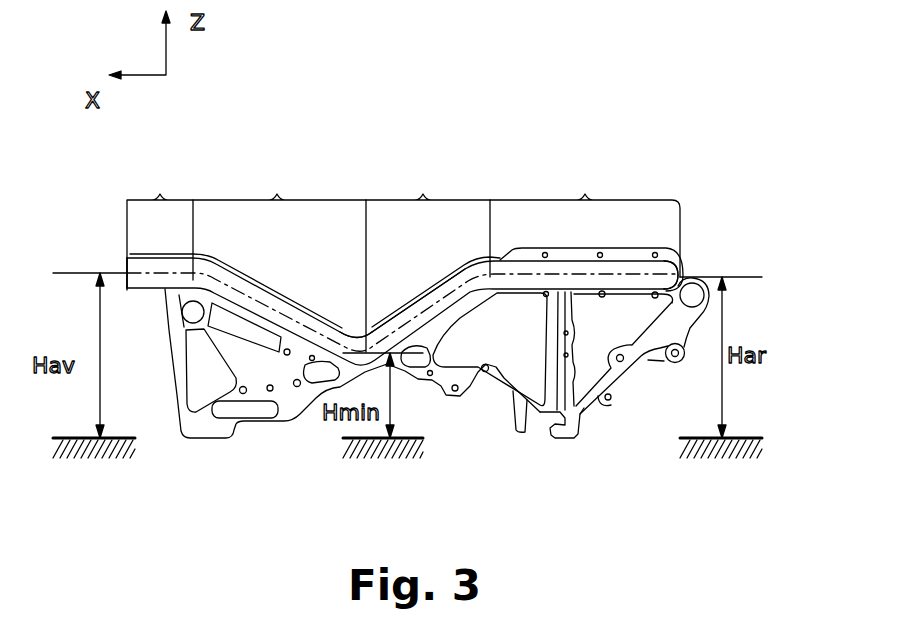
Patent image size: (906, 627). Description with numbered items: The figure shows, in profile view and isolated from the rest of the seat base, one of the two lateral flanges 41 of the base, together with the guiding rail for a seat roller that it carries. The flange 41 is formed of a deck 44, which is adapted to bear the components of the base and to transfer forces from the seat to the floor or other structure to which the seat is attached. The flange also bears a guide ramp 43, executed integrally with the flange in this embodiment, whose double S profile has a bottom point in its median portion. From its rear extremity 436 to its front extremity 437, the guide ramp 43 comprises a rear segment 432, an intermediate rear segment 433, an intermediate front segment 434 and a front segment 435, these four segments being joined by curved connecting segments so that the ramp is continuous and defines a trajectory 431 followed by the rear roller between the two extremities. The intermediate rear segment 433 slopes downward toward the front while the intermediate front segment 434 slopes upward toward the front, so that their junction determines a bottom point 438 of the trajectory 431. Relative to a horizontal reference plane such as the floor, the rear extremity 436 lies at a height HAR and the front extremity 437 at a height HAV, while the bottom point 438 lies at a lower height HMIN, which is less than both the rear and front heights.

The flange 41 is at (194, 459).
The guide ramp 43 is at (272, 292).
The deck 44 is at (642, 356).
The trajectory 431 is at (455, 297).
The rear segment 432 is at (585, 224).
The intermediate rear segment 433 is at (428, 224).
The intermediate front segment 434 is at (279, 262).
The front segment 435 is at (160, 231).
The rear extremity 436 is at (679, 271).
The front extremity 437 is at (127, 259).
The bottom point 438 is at (383, 332).